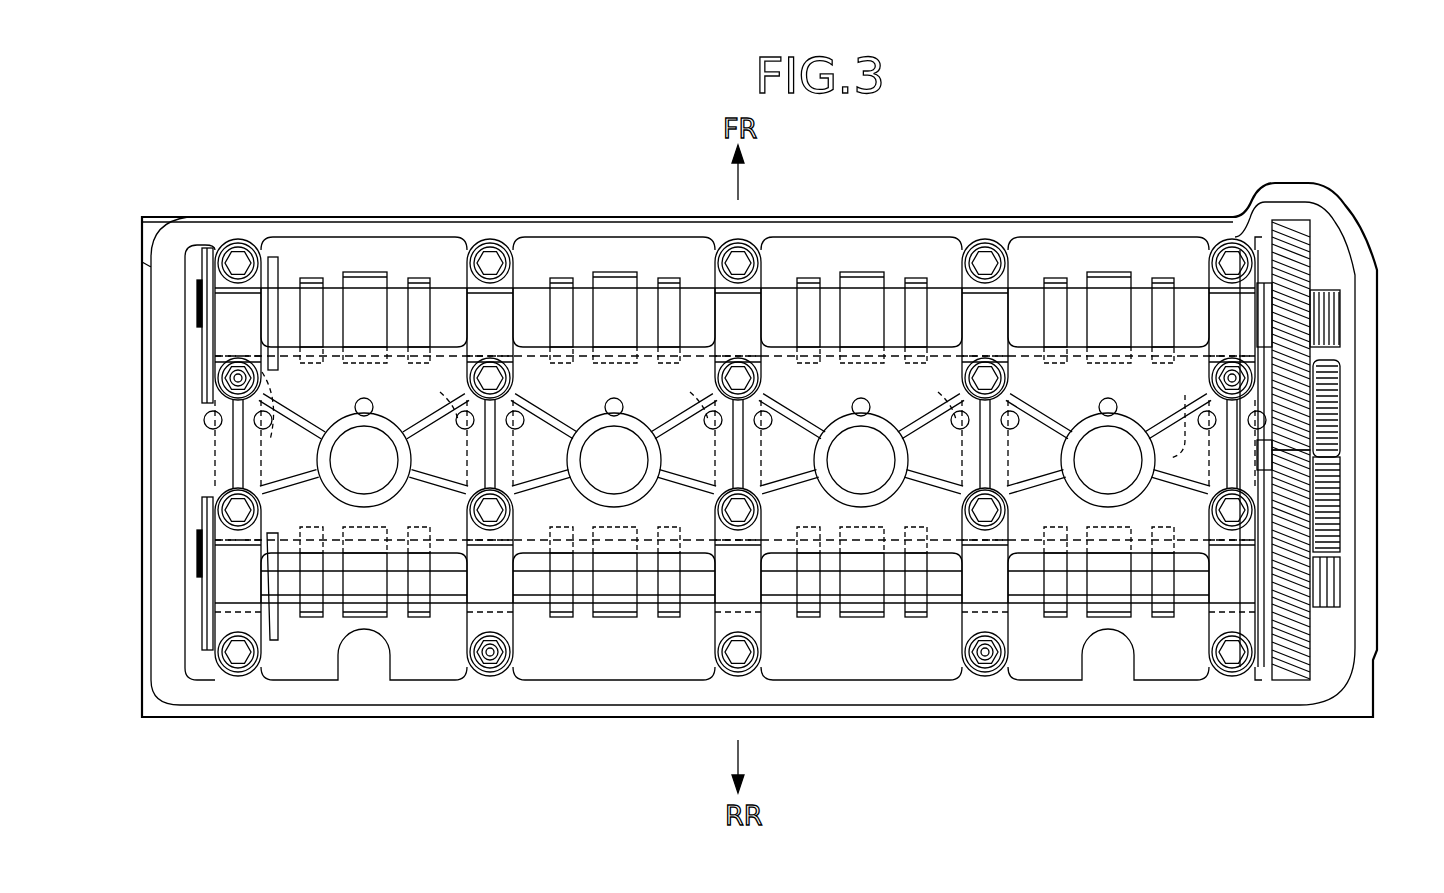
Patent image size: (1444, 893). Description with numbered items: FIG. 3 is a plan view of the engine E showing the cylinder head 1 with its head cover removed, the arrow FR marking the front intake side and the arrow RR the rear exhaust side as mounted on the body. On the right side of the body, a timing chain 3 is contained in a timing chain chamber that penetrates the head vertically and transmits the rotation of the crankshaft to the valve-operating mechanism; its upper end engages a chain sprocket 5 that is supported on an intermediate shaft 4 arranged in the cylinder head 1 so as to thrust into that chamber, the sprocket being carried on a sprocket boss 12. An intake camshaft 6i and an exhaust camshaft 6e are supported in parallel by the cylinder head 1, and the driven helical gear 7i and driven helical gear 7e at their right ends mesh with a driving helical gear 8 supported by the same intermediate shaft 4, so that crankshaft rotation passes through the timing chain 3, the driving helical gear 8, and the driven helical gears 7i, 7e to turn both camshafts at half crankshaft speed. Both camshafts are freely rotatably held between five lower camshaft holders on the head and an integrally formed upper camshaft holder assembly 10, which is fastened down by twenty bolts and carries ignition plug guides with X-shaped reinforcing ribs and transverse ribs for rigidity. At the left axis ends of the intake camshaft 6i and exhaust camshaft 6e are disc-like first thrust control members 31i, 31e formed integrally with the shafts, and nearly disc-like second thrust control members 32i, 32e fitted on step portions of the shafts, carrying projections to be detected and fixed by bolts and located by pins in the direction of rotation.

The cylinder head 1 is at (1108, 210).
The timing chain 3 is at (1342, 375).
The intermediate shaft 4 is at (1262, 450).
The chain sprocket 5 is at (1348, 450).
The intake camshaft 6i is at (652, 280).
The exhaust camshaft 6e is at (650, 618).
The driven helical gear 7i is at (1300, 222).
The driven helical gear 7e is at (1292, 665).
The driving helical gear 8 is at (1342, 515).
The upper camshaft holder assembly 10 is at (893, 560).
The sprocket boss 12 is at (1325, 272).
The first thrust control member 31i is at (273, 300).
The first thrust control member 31e is at (273, 620).
The second thrust control member 32i is at (205, 268).
The second thrust control member 32e is at (205, 600).
The engine E is at (1000, 205).